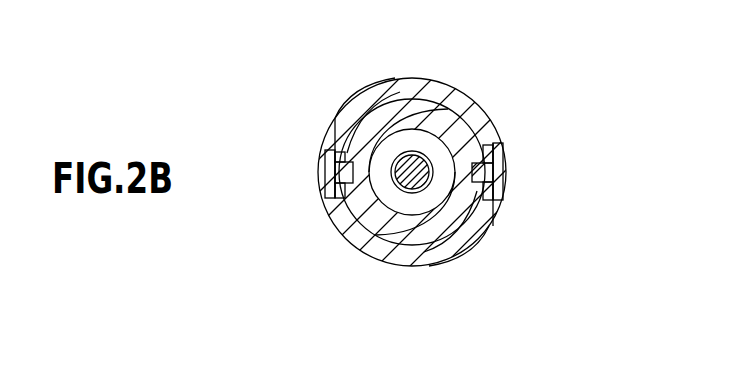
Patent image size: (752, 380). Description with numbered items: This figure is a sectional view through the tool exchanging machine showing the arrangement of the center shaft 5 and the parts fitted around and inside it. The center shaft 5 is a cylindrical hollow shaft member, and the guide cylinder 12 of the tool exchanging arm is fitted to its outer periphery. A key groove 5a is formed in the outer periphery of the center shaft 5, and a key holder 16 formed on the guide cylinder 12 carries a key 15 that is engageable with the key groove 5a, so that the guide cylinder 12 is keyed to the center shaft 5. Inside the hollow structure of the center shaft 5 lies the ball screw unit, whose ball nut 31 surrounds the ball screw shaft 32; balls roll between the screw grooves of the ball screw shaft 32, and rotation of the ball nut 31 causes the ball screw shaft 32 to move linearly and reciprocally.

The center shaft 5 is at (457, 213).
The key groove 5a is at (357, 243).
The guide cylinder 12 is at (433, 257).
The key 15 is at (325, 157).
The key holder 16 is at (514, 149).
The ball nut 31 is at (388, 137).
The ball screw shaft 32 is at (422, 153).